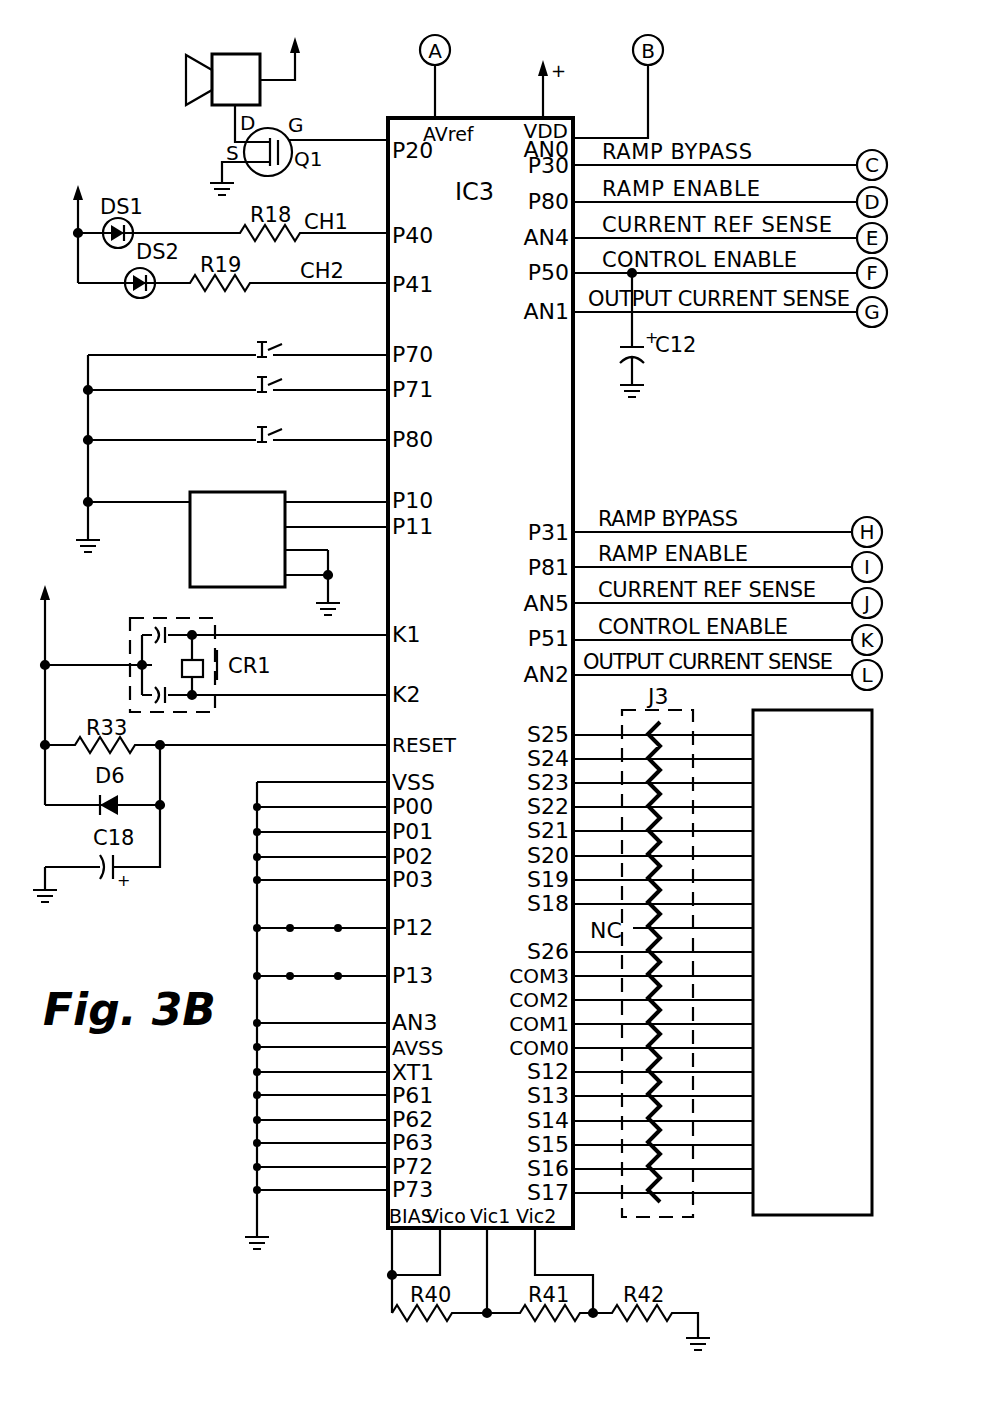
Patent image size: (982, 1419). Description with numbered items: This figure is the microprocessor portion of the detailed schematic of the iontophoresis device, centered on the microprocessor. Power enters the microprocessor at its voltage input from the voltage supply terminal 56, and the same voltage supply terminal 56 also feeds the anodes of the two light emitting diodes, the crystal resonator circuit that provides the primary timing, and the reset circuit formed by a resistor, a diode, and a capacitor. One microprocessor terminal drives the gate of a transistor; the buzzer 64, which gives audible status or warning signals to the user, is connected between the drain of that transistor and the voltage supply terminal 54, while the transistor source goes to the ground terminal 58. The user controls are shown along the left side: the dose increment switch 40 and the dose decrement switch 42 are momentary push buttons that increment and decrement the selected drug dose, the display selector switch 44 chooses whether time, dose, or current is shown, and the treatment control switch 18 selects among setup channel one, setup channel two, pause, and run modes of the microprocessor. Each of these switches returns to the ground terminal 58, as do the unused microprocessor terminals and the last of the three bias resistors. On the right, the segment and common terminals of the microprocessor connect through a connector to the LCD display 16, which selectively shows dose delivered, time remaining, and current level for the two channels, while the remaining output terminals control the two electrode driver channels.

The liquid crystal display 16 is at (815, 1218).
The treatment control switch 18 is at (190, 562).
The dose increment switch 40 is at (270, 345).
The dose decrement switch 42 is at (270, 380).
The display selector switch 44 is at (270, 428).
The voltage supply terminal 54 is at (300, 66).
The voltage supply terminal 56 is at (80, 202).
The ground terminal 58 is at (216, 168).
The buzzer 64 is at (222, 52).